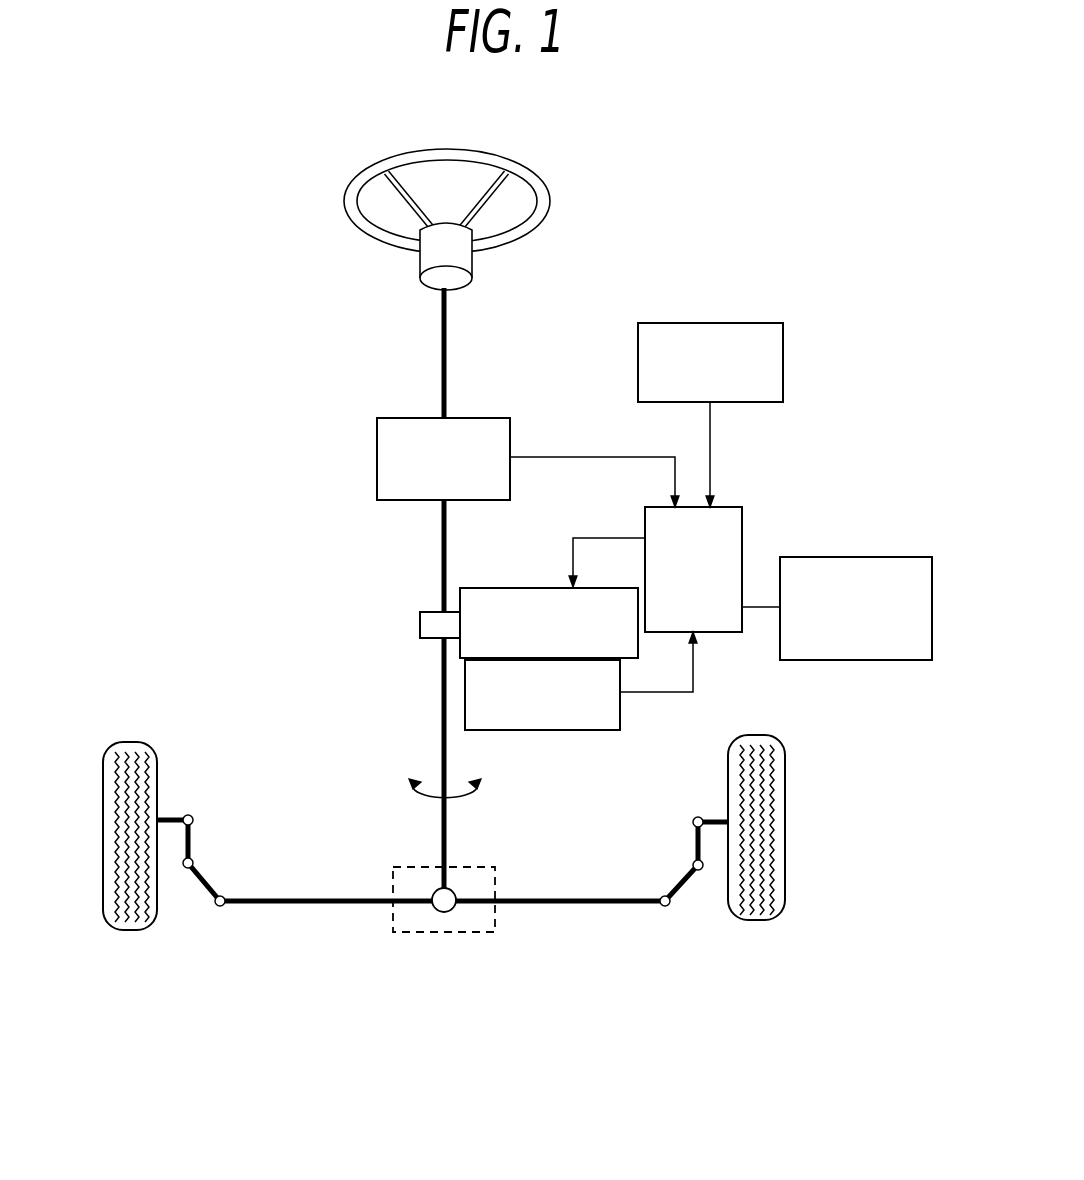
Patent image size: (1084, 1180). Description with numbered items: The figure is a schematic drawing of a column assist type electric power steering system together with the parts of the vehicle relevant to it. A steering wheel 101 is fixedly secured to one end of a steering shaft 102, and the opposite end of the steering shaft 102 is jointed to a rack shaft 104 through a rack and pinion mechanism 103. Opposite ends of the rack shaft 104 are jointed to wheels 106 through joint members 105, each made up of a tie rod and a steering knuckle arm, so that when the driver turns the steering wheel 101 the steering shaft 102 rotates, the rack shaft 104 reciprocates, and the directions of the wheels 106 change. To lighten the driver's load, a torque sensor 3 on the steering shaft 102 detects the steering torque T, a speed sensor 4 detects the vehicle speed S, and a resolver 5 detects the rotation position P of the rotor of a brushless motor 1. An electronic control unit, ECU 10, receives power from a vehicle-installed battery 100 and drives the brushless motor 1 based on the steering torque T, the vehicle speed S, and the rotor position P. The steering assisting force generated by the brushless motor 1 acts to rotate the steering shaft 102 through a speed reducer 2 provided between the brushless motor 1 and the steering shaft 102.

The brushless motor 1 is at (529, 586).
The speed reducer 2 is at (431, 611).
The torque sensor 3 is at (377, 463).
The speed sensor 4 is at (712, 322).
The resolver 5 is at (546, 732).
The electronic control unit (ECU) 10 is at (745, 531).
The vehicle-installed battery 100 is at (847, 661).
The steering wheel 101 is at (550, 203).
The steering shaft 102 is at (442, 356).
The rack and pinion mechanism 103 is at (447, 934).
The rack shaft 104 is at (570, 906).
The joint member 105 is at (216, 863).
The wheel 106 is at (128, 932).